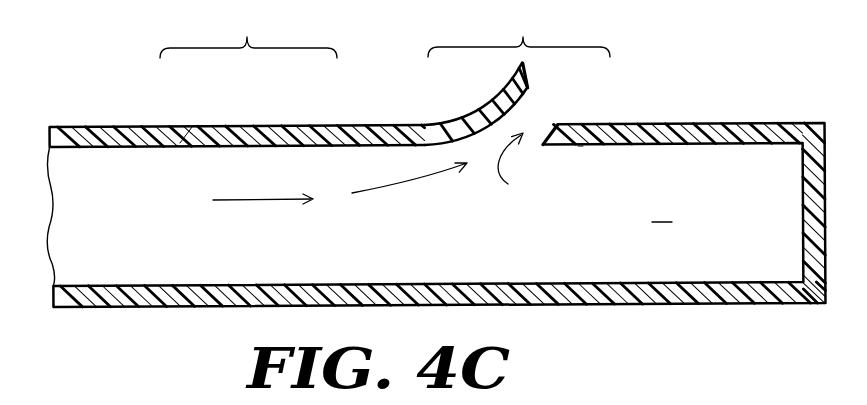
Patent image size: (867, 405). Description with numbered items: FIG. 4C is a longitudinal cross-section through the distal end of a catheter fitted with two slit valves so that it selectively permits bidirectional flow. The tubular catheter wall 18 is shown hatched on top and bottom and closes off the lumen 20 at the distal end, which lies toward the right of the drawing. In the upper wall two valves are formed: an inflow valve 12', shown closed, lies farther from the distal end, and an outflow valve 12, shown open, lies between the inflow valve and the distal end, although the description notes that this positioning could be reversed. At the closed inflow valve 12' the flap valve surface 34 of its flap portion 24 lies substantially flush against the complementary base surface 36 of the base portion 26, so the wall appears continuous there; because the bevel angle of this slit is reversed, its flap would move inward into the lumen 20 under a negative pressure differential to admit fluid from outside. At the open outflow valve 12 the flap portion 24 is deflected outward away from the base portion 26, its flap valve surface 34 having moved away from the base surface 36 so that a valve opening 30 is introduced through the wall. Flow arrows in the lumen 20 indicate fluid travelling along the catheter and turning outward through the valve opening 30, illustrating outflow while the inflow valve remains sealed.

The valve assembly 12 is at (519, 34).
The inflow valve 12' is at (248, 34).
The catheter wall 18 is at (689, 124).
The lumen 20 is at (664, 210).
The flap portion 24 is at (497, 96).
The base portion 26 is at (178, 130).
The valve opening 30 is at (519, 166).
The flap valve surface 34 is at (535, 80).
The base surface 36 is at (549, 126).